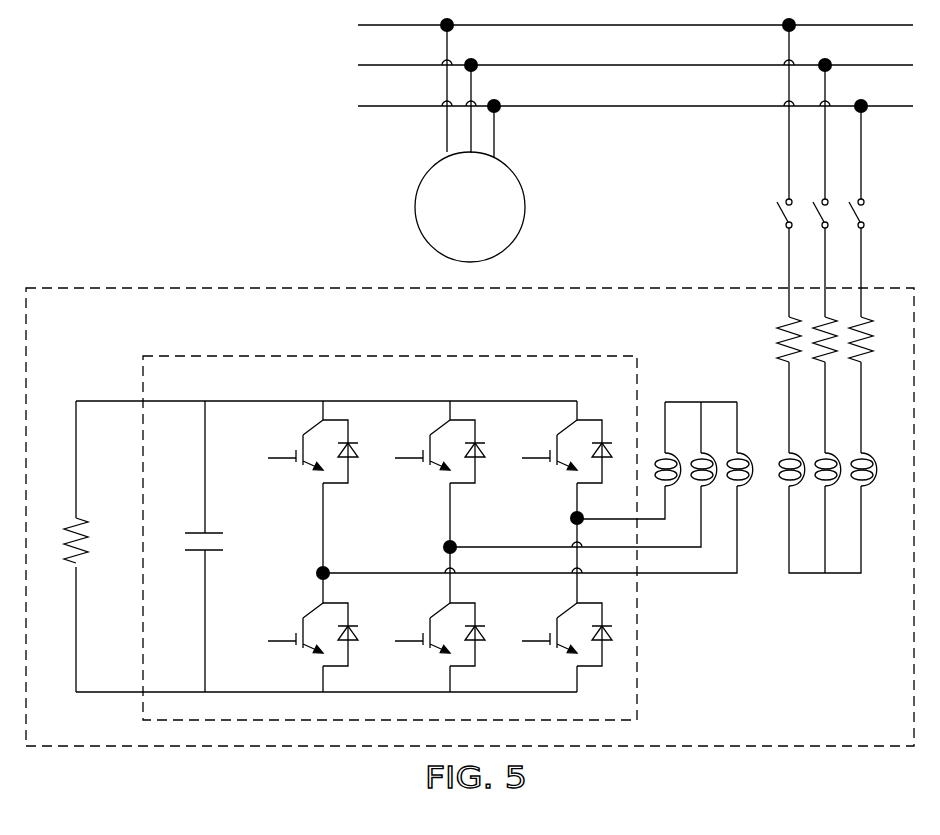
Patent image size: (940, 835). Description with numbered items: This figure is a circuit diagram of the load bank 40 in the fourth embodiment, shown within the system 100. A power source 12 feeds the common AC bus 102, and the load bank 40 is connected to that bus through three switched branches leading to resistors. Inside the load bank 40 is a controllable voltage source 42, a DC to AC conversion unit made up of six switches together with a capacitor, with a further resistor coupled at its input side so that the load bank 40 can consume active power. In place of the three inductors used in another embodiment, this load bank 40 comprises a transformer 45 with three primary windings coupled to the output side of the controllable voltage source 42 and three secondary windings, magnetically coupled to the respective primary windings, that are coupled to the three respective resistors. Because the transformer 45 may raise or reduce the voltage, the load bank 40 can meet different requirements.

The system 100 is at (208, 150).
The common AC bus 102 is at (893, 110).
The power source 12 is at (413, 200).
The load bank 40 is at (155, 288).
The controllable voltage source 42 is at (406, 356).
The transformer 45 is at (760, 582).